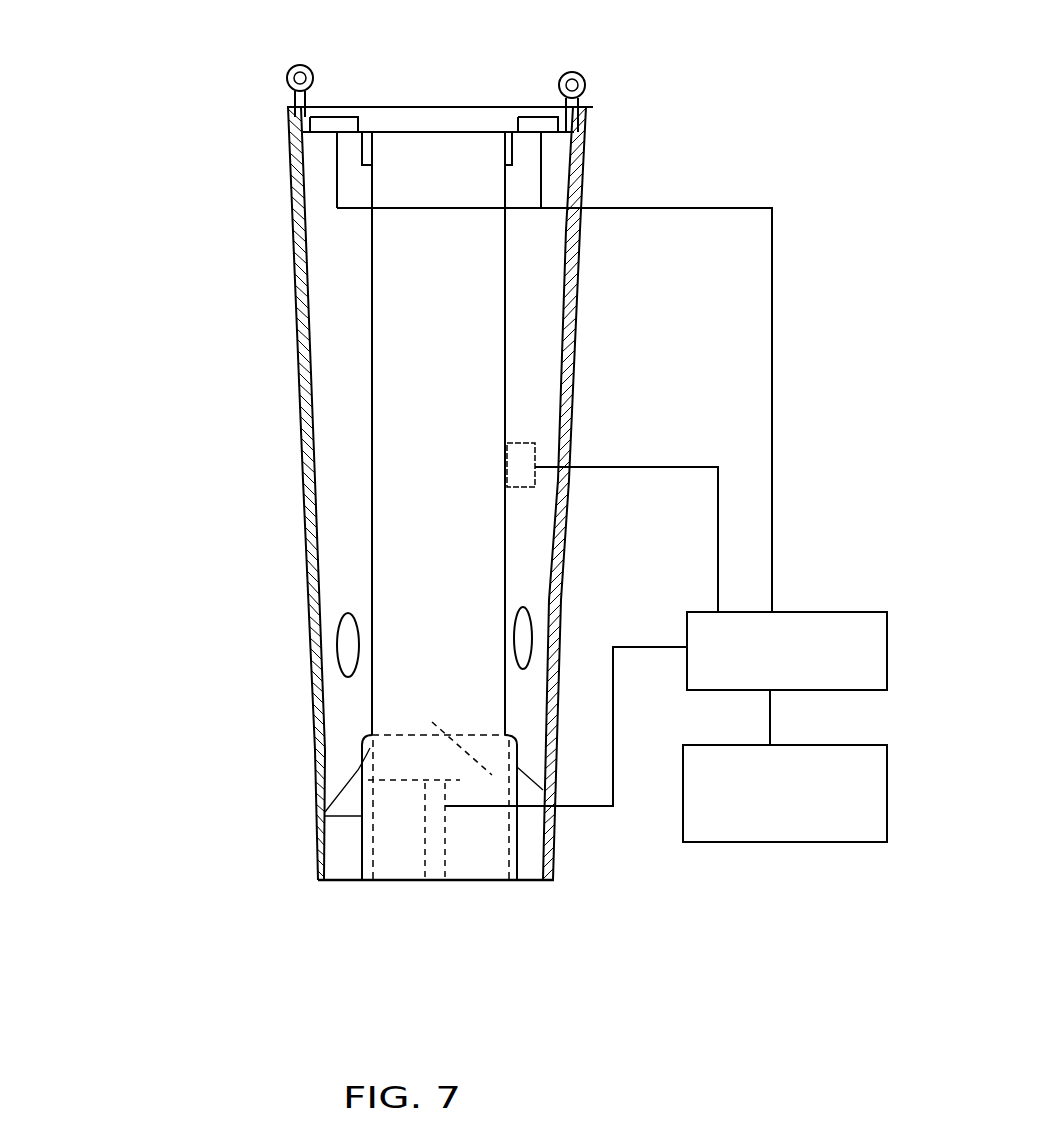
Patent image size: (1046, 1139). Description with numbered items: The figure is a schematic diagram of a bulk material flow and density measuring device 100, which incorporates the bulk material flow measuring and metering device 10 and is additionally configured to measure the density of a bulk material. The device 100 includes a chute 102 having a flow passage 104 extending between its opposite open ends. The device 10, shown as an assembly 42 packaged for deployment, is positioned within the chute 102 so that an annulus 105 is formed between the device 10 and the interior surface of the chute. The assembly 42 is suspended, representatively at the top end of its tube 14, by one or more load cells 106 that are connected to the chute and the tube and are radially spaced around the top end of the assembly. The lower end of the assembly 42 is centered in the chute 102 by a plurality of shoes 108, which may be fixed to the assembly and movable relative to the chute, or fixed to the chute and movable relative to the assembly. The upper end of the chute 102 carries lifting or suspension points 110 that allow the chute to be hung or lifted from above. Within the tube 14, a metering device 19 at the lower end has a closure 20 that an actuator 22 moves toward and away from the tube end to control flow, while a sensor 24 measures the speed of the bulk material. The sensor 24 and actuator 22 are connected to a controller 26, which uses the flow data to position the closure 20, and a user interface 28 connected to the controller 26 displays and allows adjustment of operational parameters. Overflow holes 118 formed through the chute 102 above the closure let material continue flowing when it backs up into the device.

The bulk material flow and density measuring device 100 is at (113, 117).
The bulk material flow measuring and metering device 10 is at (365, 448).
The tube 14 is at (491, 307).
The metering device 19 is at (363, 818).
The closure 20 is at (362, 750).
The actuator 22 is at (442, 848).
The sensor 24 is at (537, 460).
The controller 26 is at (878, 657).
The user interface 28 is at (878, 795).
The assembly 42 is at (509, 558).
The chute 102 is at (297, 325).
The flow passage 104 is at (330, 378).
The annulus 105 is at (322, 240).
The load cells 106 is at (345, 117).
The shoes 108 is at (345, 832).
The lifting or suspension points 110 is at (624, 38).
The overflow holes 118 is at (345, 678).